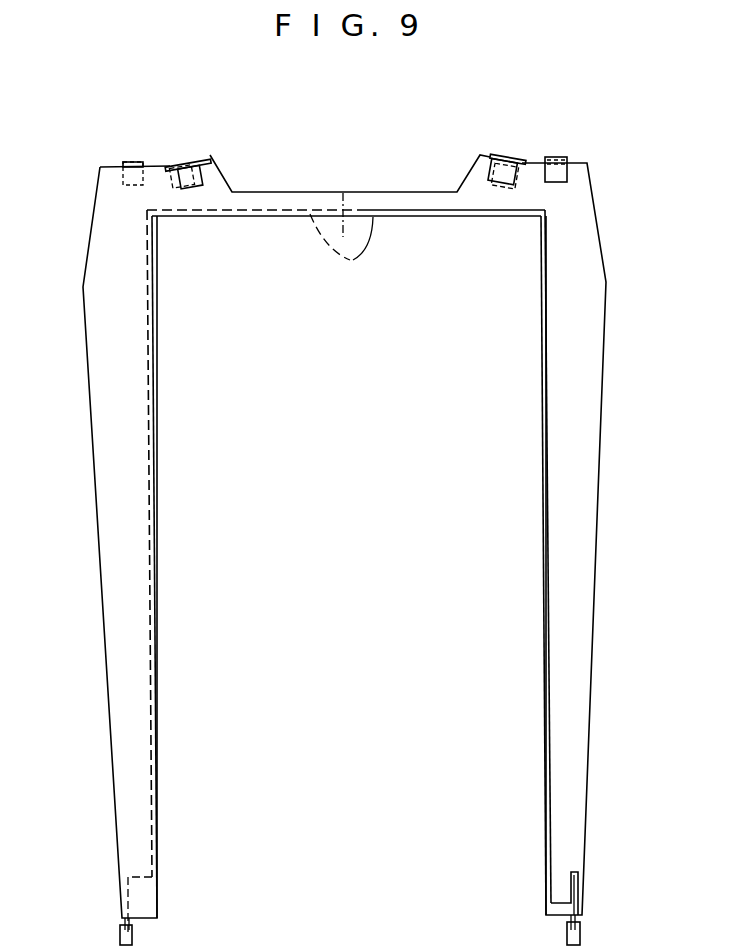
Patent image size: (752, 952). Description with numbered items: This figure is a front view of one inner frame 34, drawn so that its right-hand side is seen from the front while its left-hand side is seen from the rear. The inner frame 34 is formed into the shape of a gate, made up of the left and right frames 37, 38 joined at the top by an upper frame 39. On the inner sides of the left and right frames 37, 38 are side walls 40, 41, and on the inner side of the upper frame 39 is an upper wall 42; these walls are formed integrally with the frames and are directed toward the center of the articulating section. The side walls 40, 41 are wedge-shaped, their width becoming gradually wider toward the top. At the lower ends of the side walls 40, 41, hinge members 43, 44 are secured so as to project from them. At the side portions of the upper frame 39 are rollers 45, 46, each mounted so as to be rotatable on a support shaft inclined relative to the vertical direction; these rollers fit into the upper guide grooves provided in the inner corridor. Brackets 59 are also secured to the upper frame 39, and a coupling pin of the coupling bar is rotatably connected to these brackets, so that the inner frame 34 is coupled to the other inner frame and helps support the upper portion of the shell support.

The inner frame 34 is at (612, 305).
The right frame 37 is at (582, 523).
The left frame 38 is at (115, 523).
The upper frame 39 is at (312, 207).
The side wall 40 is at (548, 613).
The side wall 41 is at (150, 583).
The upper wall 42 is at (341, 240).
The hinge member 43 is at (580, 930).
The hinge member 44 is at (132, 938).
The roller 45 is at (508, 165).
The roller 46 is at (183, 172).
The bracket 59 is at (131, 160).